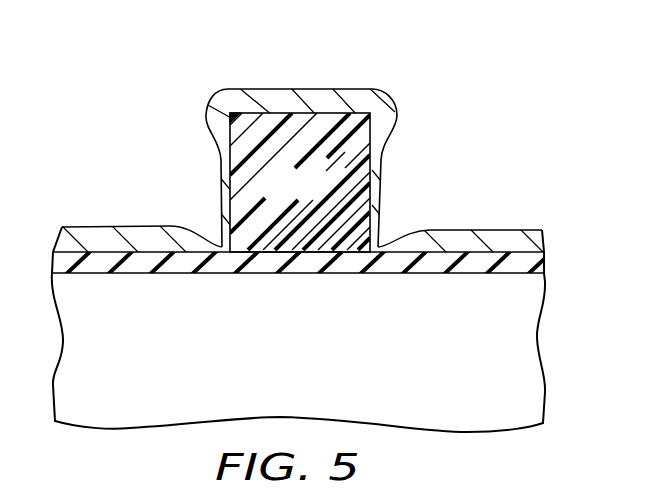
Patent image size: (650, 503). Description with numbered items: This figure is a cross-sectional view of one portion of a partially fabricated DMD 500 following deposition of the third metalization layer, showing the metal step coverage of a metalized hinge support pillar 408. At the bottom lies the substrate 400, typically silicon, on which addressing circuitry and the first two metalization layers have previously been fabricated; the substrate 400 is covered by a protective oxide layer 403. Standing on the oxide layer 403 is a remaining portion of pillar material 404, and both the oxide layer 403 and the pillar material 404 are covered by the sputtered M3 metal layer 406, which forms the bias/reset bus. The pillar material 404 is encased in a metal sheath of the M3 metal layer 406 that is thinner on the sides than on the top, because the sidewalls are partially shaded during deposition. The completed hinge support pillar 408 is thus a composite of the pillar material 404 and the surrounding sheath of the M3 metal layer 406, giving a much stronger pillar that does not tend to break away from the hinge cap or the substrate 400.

The substrate 400 is at (323, 358).
The protective oxide layer 403 is at (539, 265).
The pillar material 404 is at (320, 197).
The M3 metal layer 406 is at (537, 241).
The hinge support pillar 408 is at (186, 94).
The partially fabricated DMD 500 is at (387, 86).